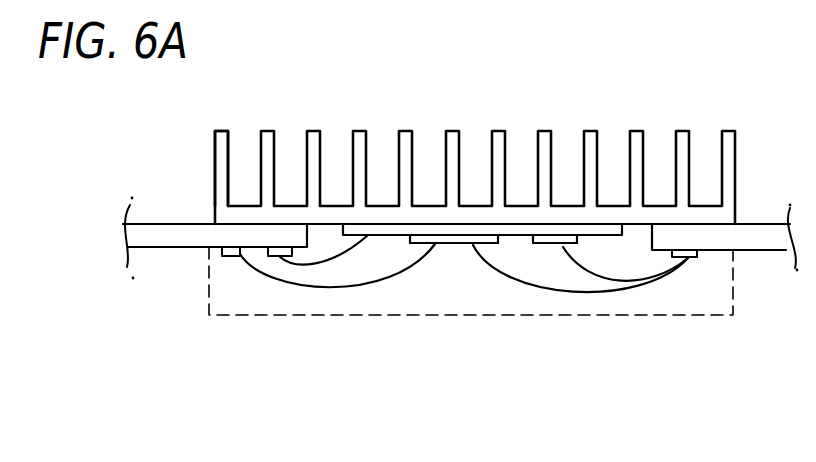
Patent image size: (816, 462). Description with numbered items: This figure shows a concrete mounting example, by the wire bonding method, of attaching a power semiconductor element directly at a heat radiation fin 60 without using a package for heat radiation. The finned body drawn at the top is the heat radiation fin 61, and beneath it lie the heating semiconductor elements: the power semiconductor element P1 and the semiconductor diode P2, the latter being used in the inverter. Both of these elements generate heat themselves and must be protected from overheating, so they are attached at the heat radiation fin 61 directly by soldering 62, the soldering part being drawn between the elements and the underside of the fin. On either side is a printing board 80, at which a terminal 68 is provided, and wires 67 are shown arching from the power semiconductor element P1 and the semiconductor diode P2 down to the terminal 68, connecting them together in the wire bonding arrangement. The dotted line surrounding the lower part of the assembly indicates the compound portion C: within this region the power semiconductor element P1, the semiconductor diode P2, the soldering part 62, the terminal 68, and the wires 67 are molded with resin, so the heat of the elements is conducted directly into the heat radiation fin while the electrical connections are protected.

The heat radiation fin 60 is at (659, 104).
The heat radiation fin 61 is at (215, 139).
The soldering 62 is at (565, 230).
The wires 67 is at (343, 290).
The terminal 68 is at (230, 257).
The printing board 80 is at (168, 237).
The power semiconductor element P1 is at (453, 245).
The semiconductor diode P2 is at (538, 243).
The compound portion C is at (392, 317).